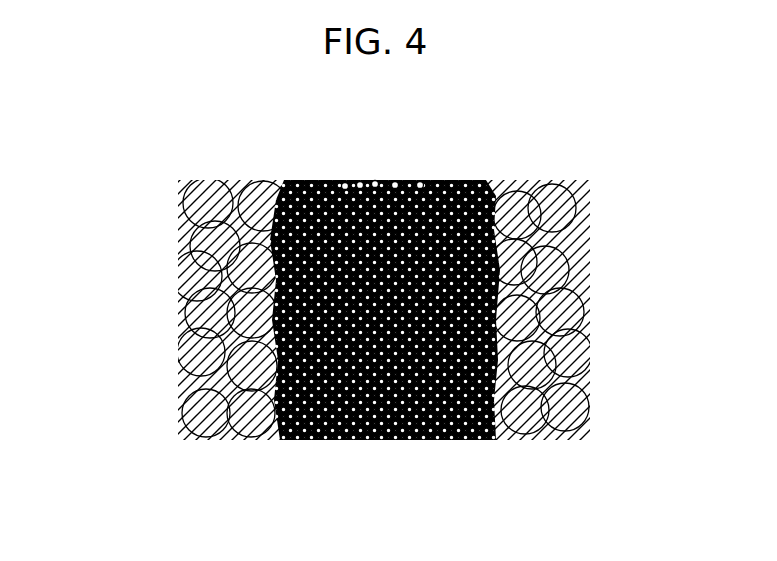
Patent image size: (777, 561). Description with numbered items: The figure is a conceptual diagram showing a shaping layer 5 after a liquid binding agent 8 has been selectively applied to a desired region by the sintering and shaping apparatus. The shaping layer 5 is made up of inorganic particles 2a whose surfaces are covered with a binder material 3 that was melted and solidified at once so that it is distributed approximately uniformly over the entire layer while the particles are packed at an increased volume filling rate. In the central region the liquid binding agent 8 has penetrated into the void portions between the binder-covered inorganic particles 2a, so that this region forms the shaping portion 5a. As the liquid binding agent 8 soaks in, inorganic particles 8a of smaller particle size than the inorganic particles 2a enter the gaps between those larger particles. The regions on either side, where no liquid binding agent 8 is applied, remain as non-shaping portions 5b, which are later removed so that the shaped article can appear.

The inorganic particles 2a is at (203, 240).
The binder material 3 is at (183, 375).
The shaping layer 5 is at (596, 183).
The shaping portion 5a is at (385, 296).
The non-shaping portion 5b is at (341, 335).
The liquid binding agent 8 is at (360, 184).
The inorganic particles 8a is at (395, 183).